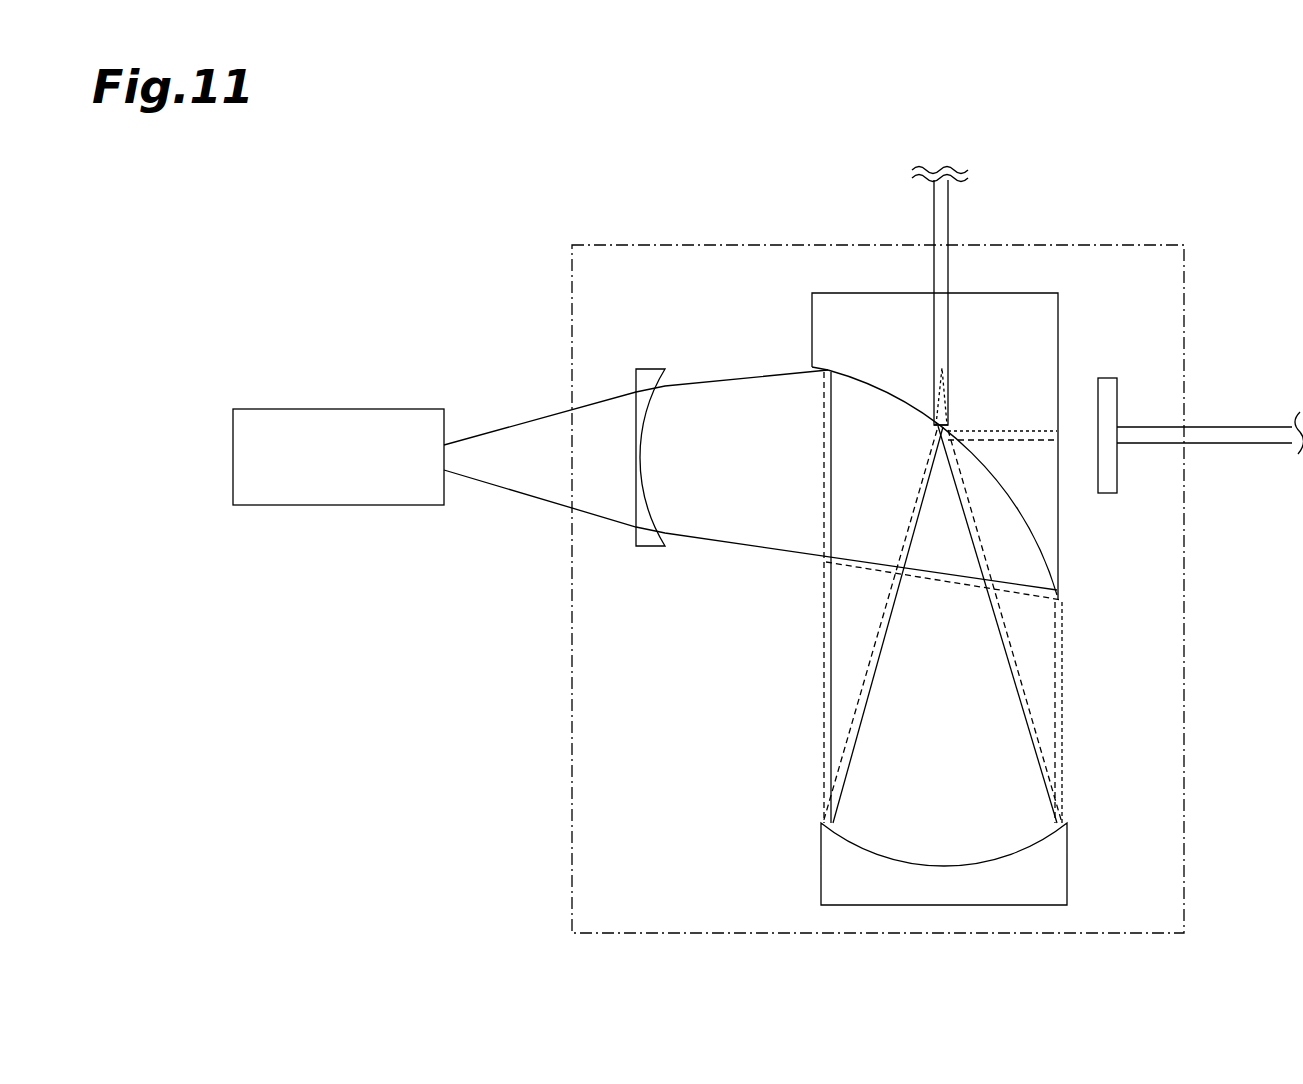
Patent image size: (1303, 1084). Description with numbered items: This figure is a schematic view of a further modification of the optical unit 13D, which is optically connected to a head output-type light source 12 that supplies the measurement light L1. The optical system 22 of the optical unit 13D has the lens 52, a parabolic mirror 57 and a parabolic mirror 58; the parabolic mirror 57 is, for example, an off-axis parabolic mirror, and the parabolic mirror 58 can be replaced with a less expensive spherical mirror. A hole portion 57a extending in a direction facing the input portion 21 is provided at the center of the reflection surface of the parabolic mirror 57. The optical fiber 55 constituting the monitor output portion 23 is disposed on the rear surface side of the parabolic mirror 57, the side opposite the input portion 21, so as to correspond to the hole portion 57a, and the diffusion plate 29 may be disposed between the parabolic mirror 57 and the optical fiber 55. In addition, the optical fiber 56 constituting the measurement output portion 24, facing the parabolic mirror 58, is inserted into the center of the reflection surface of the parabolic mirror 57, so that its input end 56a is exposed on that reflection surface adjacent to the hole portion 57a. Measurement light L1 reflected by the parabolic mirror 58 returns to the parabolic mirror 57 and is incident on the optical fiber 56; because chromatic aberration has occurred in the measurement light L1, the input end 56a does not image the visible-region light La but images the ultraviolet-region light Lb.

The optical unit 13D is at (546, 224).
The head output-type light source 12 is at (340, 409).
The measurement light L1 is at (523, 397).
The input portion 21 is at (566, 512).
The lens 52 is at (652, 369).
The optical system 22 is at (792, 292).
The parabolic mirror 57 is at (812, 326).
The hole portion 57a is at (1002, 437).
The light having a wavelength in the visible region La is at (824, 610).
The light having a wavelength in the ultraviolet region Lb is at (831, 668).
The parabolic mirror 58 is at (822, 868).
The optical fiber 56 is at (950, 212).
The measurement output portion 24 is at (924, 234).
The input end 56a is at (874, 322).
The diffusion plate 29 is at (1110, 378).
The optical fiber 55 is at (1222, 427).
The monitor output portion 23 is at (1193, 455).